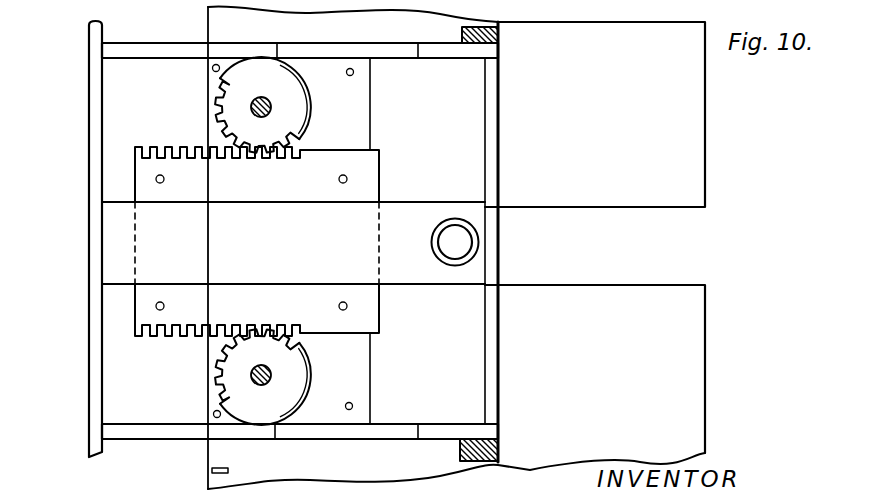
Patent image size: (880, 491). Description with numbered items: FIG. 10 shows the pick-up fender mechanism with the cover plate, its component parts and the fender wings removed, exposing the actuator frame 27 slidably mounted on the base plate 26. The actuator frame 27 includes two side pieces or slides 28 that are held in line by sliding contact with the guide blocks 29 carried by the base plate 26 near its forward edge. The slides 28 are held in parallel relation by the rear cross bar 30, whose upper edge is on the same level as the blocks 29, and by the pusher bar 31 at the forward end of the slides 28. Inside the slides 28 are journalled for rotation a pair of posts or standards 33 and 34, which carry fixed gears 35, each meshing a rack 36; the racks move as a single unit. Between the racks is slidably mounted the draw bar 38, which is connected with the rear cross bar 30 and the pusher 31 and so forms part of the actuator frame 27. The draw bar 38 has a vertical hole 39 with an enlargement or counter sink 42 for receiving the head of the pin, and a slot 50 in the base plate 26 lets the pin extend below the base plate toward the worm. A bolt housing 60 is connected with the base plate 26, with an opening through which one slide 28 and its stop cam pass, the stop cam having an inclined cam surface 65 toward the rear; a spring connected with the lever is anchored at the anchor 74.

The base plate 26 is at (694, 364).
The actuator frame 27 is at (513, 117).
The slides 28 is at (164, 47).
The guide blocks 29 is at (360, 116).
The rear cross bar 30 is at (495, 357).
The pusher bar 31 is at (92, 107).
The post 33 is at (256, 104).
The standard 34 is at (254, 372).
The gears 35 is at (229, 118).
The rack 36 is at (374, 190).
The draw bar 38 is at (118, 246).
The vertical hole 39 is at (441, 241).
The counter sink 42 is at (480, 238).
The slot 50 is at (690, 223).
The bolt housing 60 is at (500, 34).
The cam surface 65 is at (442, 56).
The anchor 74 is at (212, 472).